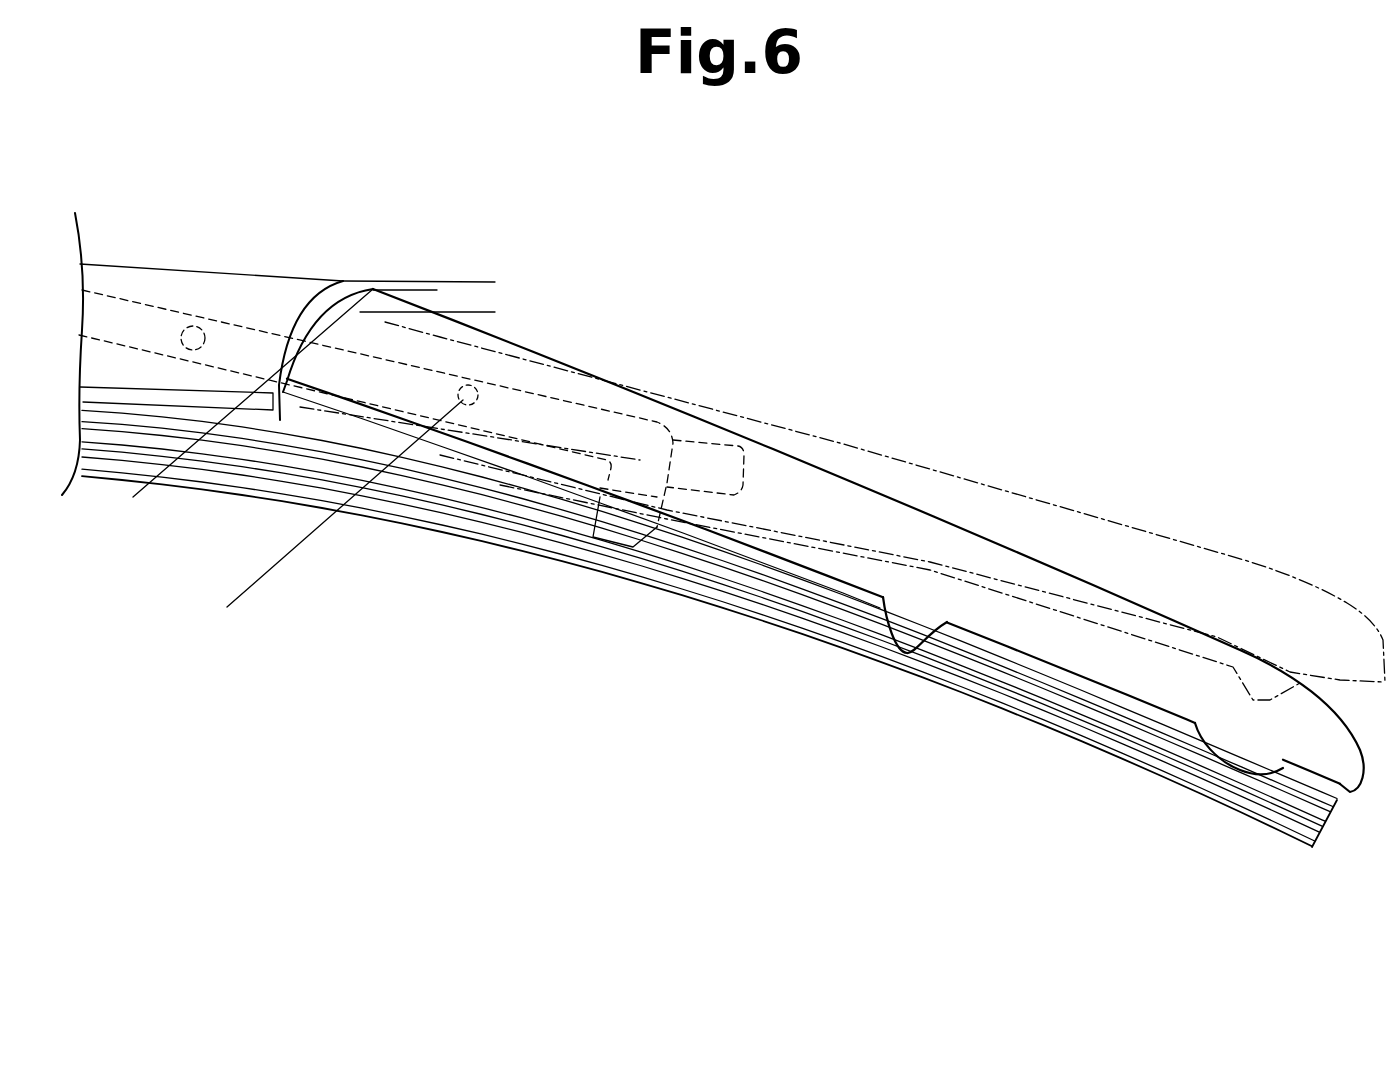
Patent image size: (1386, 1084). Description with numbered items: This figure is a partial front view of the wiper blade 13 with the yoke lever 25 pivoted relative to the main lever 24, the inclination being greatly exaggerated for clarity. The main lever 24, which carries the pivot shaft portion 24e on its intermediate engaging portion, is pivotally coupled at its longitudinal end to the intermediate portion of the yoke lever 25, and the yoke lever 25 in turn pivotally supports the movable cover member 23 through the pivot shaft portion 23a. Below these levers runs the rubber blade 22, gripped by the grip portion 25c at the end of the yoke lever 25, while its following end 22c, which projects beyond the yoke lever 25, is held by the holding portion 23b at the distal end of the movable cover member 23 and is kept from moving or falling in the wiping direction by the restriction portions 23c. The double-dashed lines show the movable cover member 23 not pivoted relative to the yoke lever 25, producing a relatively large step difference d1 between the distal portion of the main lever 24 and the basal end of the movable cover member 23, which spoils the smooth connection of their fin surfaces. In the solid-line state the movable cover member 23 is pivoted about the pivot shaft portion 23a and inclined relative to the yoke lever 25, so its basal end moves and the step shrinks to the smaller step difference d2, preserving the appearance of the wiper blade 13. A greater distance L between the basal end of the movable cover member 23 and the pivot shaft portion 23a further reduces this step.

The wiper blade 13 is at (366, 224).
The rubber blade 22 is at (1002, 705).
The following end 22c is at (1090, 725).
The movable cover member 23 is at (1053, 563).
The pivot shaft portion 23a is at (478, 388).
The holding portion 23b is at (1243, 765).
The restriction portion 23c is at (898, 647).
The main lever 24 is at (268, 283).
The pivot shaft portion 24e is at (193, 326).
The yoke lever 25 is at (620, 410).
The grip portion 25c is at (607, 533).
The distance L is at (133, 497).
The step difference d1 is at (492, 257).
The step difference d2 is at (432, 313).